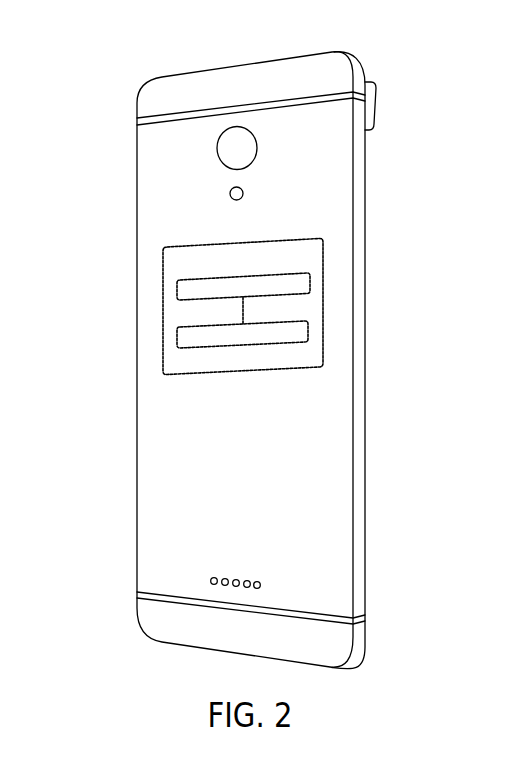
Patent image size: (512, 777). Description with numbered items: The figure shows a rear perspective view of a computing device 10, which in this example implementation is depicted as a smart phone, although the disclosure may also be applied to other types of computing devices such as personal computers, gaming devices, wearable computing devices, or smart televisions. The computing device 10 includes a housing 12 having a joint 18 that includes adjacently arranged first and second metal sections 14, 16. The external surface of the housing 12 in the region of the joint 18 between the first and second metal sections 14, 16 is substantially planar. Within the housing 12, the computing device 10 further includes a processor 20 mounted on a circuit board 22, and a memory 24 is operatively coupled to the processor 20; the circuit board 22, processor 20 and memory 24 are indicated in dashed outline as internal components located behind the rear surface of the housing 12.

The computing device 10 is at (441, 94).
The housing 12 is at (365, 367).
The first metal section 14 is at (160, 213).
The second metal section 16 is at (160, 104).
The joint 18 is at (375, 108).
The processor 20 is at (297, 294).
The circuit board 22 is at (305, 264).
The memory 24 is at (282, 342).